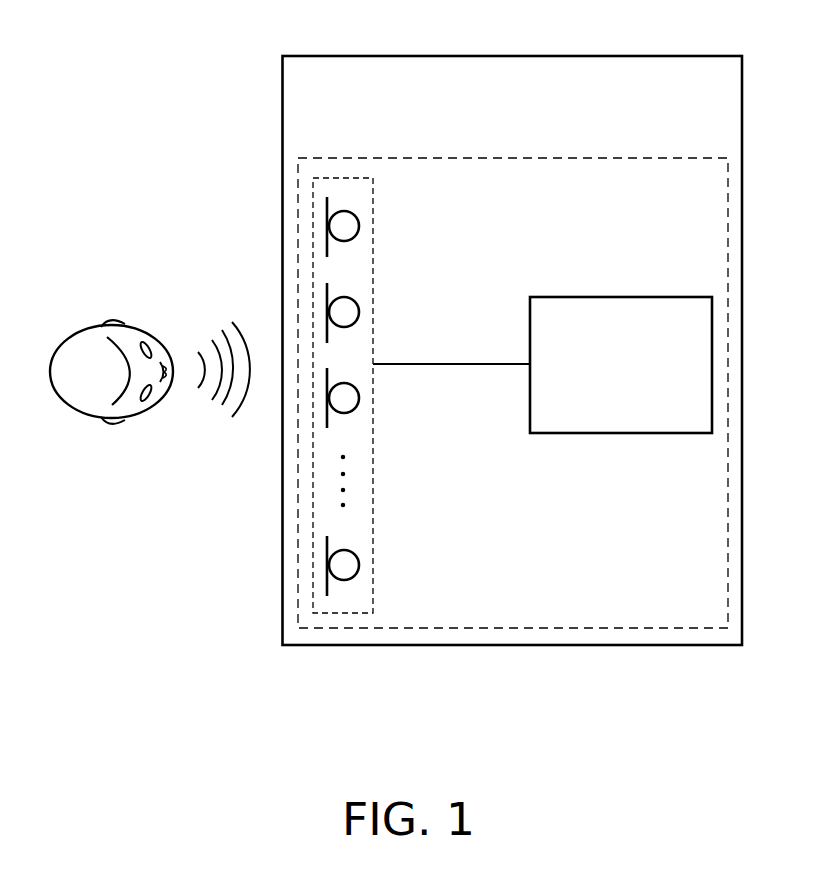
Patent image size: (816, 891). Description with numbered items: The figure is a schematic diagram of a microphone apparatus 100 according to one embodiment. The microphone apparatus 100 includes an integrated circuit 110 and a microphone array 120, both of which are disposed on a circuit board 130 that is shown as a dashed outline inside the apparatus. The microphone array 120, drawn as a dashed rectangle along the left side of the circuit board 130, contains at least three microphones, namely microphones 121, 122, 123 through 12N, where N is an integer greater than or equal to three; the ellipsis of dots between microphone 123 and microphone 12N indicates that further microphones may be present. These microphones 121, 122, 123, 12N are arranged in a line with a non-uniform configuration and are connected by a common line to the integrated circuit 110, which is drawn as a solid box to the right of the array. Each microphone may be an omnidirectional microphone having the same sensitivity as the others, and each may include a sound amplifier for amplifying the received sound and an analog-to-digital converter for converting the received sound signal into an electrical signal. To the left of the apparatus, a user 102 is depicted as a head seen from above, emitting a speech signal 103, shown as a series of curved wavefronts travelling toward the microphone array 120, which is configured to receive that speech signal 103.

The microphone apparatus 100 is at (287, 55).
The integrated circuit 110 is at (531, 297).
The microphone array 120 is at (373, 178).
The microphone 121 is at (359, 226).
The microphone 122 is at (359, 312).
The microphone 123 is at (359, 398).
The microphone 12N is at (359, 565).
The circuit board 130 is at (299, 158).
The user 102 is at (88, 325).
The speech signal 103 is at (212, 336).